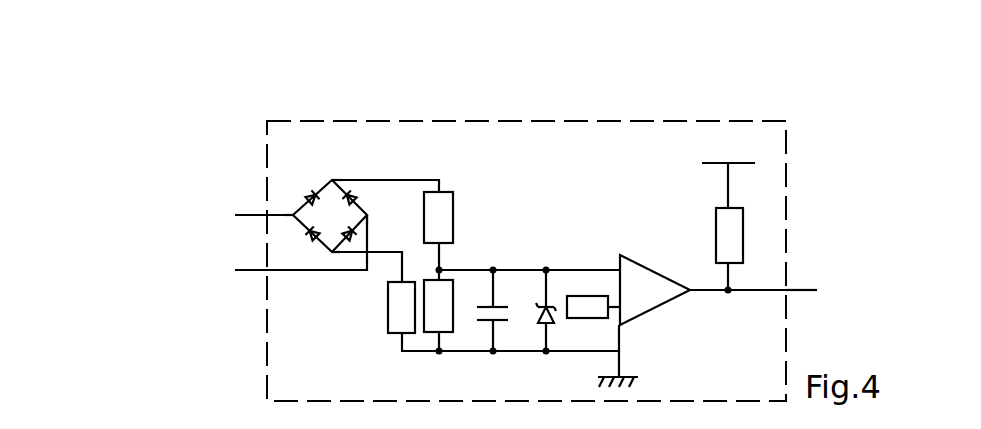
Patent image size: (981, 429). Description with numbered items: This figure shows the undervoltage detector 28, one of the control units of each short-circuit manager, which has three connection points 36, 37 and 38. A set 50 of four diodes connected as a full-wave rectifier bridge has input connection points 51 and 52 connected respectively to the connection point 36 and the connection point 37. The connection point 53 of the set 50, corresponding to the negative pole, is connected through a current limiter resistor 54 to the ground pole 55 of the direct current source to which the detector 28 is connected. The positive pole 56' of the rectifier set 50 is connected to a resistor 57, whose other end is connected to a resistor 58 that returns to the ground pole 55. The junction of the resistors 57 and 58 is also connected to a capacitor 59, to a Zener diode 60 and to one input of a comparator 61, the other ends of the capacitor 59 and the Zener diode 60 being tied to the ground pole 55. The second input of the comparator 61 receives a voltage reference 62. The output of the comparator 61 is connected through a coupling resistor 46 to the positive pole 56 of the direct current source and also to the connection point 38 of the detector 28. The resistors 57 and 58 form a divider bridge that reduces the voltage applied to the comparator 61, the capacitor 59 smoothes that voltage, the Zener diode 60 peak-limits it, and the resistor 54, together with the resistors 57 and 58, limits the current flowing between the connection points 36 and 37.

The undervoltage detector 28 is at (268, 357).
The connection point 36 is at (265, 216).
The connection point 37 is at (265, 271).
The connection point 38 is at (786, 291).
The coupling resistor 46 is at (737, 235).
The set of four diodes 50 is at (312, 177).
The input connection point 51 is at (292, 214).
The input connection point 52 is at (368, 213).
The connection point 53 is at (330, 254).
The current limiter resistor 54 is at (398, 308).
The ground pole 55 is at (641, 385).
The positive pole 56 is at (766, 149).
The positive pole 56' is at (358, 134).
The resistor 57 is at (443, 215).
The resistor 58 is at (445, 308).
The capacitor 59 is at (496, 317).
The Zener diode 60 is at (544, 323).
The comparator 61 is at (647, 283).
The voltage reference 62 is at (582, 305).